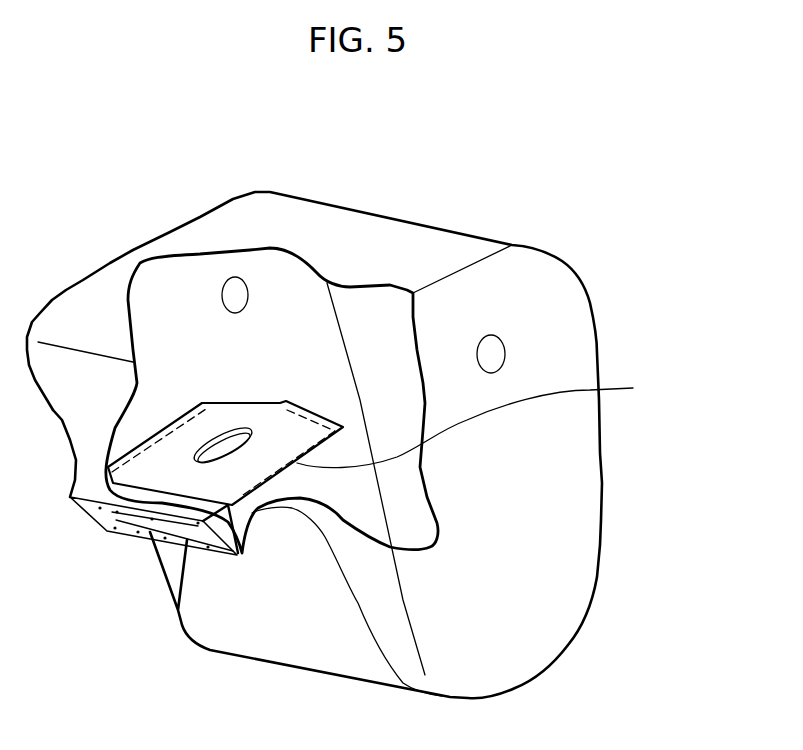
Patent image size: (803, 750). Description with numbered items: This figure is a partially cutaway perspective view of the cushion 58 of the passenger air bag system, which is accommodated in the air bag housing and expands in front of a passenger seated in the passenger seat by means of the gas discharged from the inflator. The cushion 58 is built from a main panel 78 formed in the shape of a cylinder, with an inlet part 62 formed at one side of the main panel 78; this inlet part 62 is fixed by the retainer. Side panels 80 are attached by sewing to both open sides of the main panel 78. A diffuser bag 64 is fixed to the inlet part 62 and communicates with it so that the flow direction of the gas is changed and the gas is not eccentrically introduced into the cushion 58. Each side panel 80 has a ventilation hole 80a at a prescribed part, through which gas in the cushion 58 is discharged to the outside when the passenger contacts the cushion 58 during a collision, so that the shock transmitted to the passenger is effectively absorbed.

The cushion 58 is at (349, 168).
The inlet part 62 is at (113, 527).
The diffuser bag 64 is at (481, 422).
The main panel 78 is at (368, 227).
The side panel 80 is at (563, 493).
The ventilation hole 80a is at (493, 352).